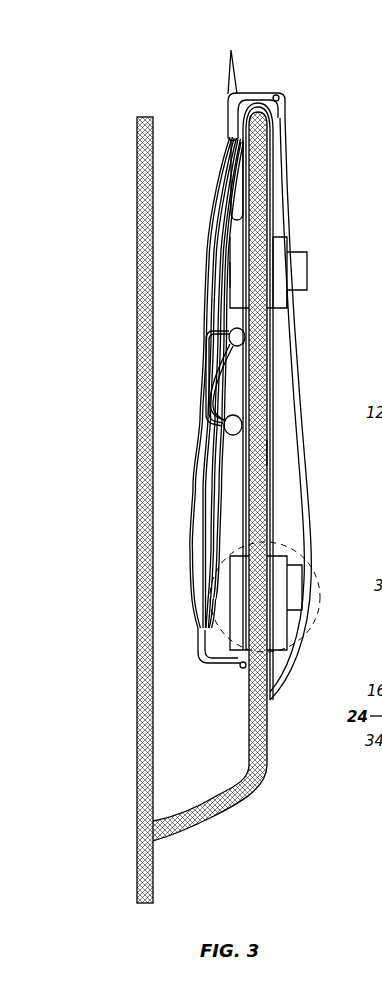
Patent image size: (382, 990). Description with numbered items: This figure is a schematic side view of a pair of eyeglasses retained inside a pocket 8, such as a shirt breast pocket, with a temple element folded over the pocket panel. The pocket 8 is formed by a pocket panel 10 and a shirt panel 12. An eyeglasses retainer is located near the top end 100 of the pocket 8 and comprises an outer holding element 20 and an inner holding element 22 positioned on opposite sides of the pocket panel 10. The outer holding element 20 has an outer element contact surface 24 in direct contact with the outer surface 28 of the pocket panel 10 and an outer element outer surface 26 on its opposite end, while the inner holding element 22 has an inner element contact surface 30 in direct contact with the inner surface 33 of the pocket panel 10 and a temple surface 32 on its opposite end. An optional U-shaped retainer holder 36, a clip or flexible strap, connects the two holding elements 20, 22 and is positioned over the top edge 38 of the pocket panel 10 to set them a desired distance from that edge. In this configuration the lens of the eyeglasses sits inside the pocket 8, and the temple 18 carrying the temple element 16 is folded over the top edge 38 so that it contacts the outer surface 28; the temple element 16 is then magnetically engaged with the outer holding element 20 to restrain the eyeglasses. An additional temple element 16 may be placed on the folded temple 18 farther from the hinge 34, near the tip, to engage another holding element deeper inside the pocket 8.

The pocket 8 is at (236, 822).
The pocket panel 10 is at (268, 738).
The shirt panel 12 is at (146, 276).
The temple element 16 is at (298, 275).
The temple 18 is at (300, 396).
The outer holding element 20 is at (273, 240).
The inner holding element 22 is at (240, 254).
The outer element contact surface 24 is at (262, 297).
The outer element outer surface 26 is at (292, 298).
The outer surface of the pocket panel 28 is at (272, 453).
The inner element contact surface 30 is at (256, 227).
The temple surface 32 is at (226, 275).
The inner surface of the pocket panel 33 is at (244, 487).
The hinge 34 is at (256, 95).
The retainer holder 36 is at (278, 165).
The top edge of the pocket panel 38 is at (258, 116).
The top end location 100 is at (300, 121).